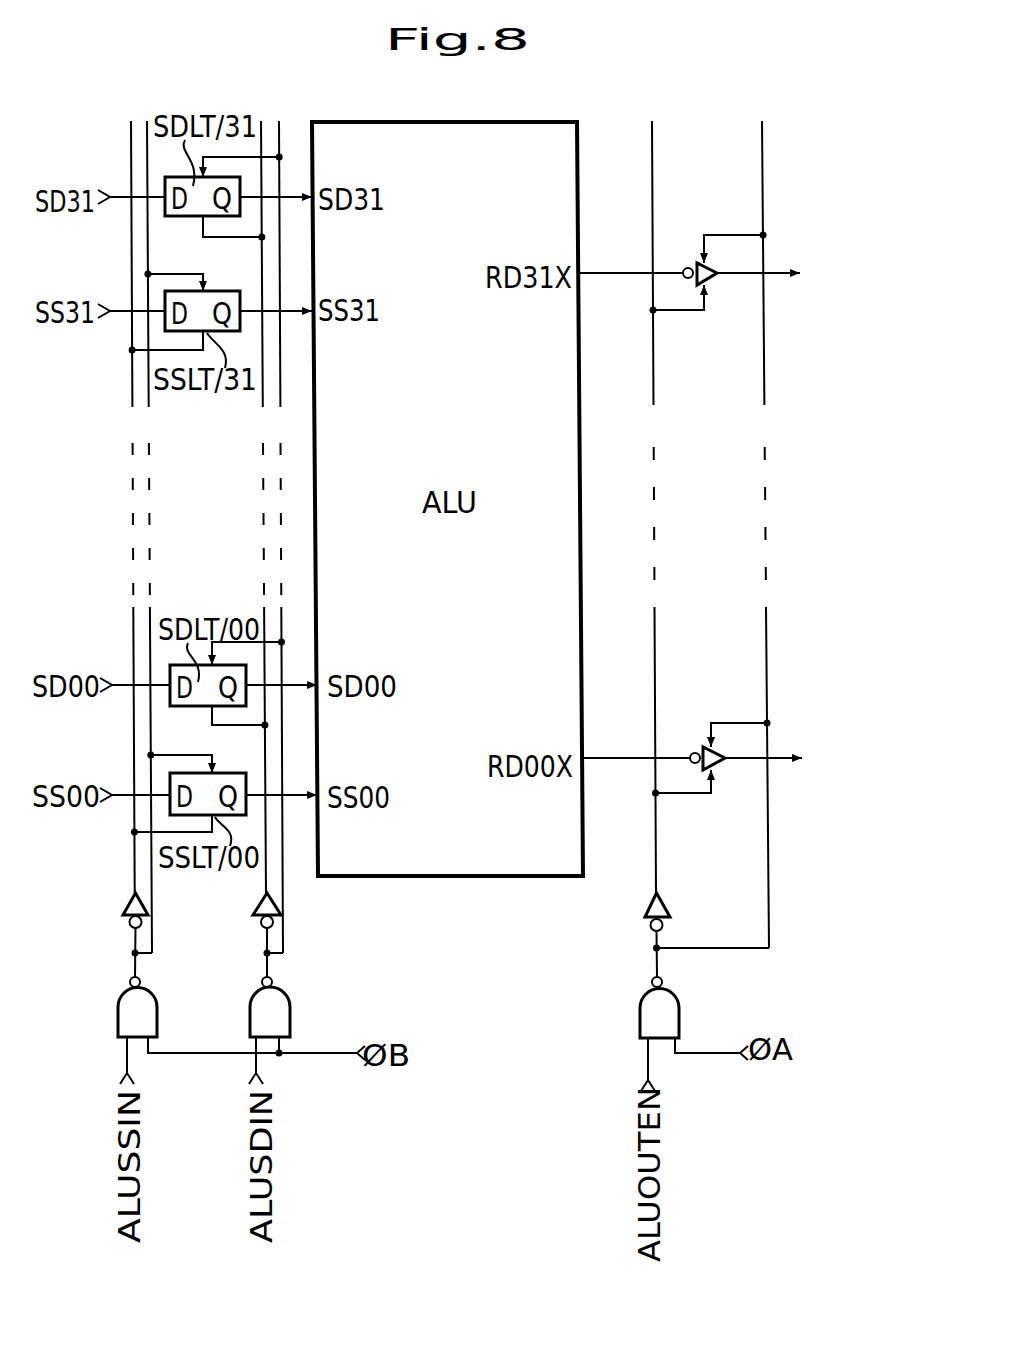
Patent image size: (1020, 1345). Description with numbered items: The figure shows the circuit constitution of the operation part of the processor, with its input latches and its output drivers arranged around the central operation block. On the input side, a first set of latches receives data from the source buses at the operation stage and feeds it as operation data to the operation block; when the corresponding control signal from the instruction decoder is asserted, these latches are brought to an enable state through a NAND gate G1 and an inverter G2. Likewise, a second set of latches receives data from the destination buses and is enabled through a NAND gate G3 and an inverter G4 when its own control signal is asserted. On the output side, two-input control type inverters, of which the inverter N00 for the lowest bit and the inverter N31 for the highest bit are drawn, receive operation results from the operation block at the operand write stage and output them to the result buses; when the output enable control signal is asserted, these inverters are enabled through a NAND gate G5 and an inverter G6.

The NAND gate G1 is at (122, 1028).
The inverter G2 is at (129, 904).
The NAND gate G3 is at (282, 1029).
The inverter G4 is at (278, 904).
The NAND gate G5 is at (672, 1026).
The inverter G6 is at (666, 902).
The two-input control type inverter N31 is at (714, 288).
The two-input control type inverter N00 is at (706, 746).